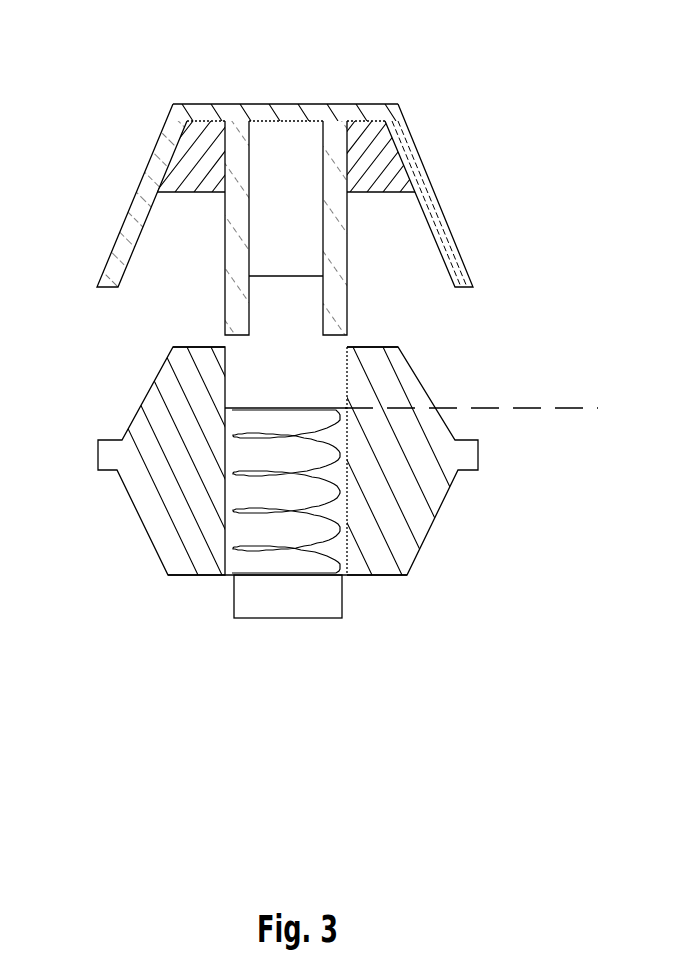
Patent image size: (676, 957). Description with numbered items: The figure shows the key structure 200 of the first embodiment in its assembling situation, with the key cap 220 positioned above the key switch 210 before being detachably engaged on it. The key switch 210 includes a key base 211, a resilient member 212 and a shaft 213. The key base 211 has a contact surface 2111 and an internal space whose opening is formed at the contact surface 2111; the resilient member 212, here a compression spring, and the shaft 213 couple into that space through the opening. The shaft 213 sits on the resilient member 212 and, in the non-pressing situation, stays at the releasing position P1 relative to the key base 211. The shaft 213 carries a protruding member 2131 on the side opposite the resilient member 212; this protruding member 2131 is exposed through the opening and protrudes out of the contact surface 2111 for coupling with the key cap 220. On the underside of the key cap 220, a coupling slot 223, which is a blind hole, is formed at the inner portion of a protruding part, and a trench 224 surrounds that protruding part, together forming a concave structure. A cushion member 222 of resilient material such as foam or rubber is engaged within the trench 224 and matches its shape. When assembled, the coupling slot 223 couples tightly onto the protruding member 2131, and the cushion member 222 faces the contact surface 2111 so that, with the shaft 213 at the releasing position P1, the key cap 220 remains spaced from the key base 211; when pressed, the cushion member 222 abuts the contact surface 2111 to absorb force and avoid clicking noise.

The key structure 200 is at (62, 34).
The key cap 220 is at (377, 100).
The cushion member 222 is at (398, 166).
The coupling slot 223 is at (279, 158).
The trench 224 is at (404, 222).
The key switch 210 is at (432, 548).
The key base 211 is at (176, 518).
The contact surface 2111 is at (323, 335).
The protruding member 2131 is at (288, 320).
The shaft 213 is at (309, 367).
The resilient member 212 is at (355, 580).
The releasing position P1 is at (485, 407).